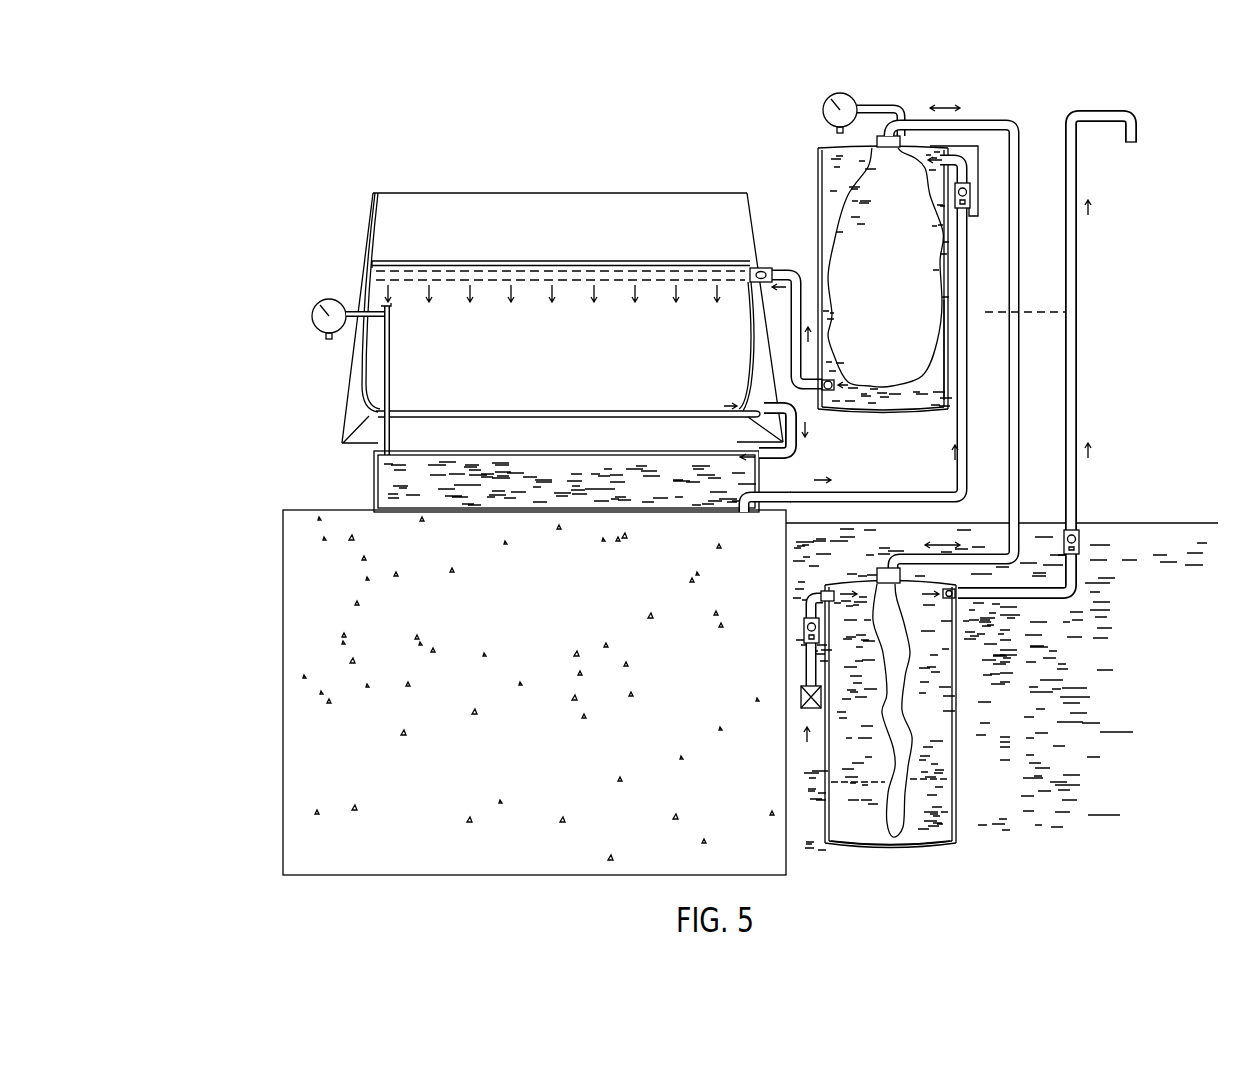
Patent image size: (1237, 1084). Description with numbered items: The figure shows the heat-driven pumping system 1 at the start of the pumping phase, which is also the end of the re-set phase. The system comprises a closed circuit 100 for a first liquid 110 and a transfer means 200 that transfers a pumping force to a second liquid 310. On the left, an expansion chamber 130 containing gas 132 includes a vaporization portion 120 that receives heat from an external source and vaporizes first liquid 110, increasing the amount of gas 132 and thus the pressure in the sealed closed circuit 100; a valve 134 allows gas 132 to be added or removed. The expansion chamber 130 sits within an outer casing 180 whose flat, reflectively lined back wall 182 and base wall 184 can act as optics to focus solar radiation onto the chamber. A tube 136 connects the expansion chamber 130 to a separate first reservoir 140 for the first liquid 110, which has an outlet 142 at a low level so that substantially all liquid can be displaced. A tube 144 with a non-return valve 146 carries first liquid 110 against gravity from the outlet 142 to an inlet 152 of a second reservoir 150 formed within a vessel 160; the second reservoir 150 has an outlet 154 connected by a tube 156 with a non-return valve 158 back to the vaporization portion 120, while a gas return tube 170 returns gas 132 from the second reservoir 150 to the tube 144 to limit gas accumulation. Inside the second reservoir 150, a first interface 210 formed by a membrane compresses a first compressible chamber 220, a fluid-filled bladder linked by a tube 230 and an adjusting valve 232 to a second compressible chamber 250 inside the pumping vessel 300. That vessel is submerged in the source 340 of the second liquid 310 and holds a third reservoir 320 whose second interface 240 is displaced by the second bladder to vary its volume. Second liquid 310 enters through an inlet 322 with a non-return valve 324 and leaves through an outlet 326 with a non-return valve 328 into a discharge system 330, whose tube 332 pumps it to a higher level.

The heat-driven pumping system 1 is at (436, 171).
The closed circuit 100 is at (279, 482).
The first liquid 110 is at (385, 492).
The vaporization portion 120 is at (372, 266).
The expansion chamber 130 is at (360, 352).
The gas 132 is at (540, 320).
The valve 134 is at (311, 316).
The tube 136 is at (799, 446).
The first reservoir 140 is at (373, 463).
The outlet 142 is at (788, 507).
The tube 144 is at (884, 498).
The non-return valve 146 is at (970, 212).
The second reservoir 150 is at (818, 176).
The inlet 152 is at (930, 141).
The outlet 154 is at (838, 392).
The tube 156 is at (780, 268).
The non-return valve 158 is at (765, 266).
The vessel 160 is at (821, 147).
The gas return tube 170 is at (981, 160).
The outer casing 180 is at (373, 194).
The back wall 182 is at (384, 230).
The base wall 184 is at (352, 426).
The transfer means 200 is at (1015, 113).
The first interface 210 is at (952, 391).
The first compressible chamber 220 is at (917, 351).
The tube 230 is at (1021, 506).
The valve 232 is at (829, 97).
The second interface 240 is at (905, 808).
The second compressible chamber 250 is at (900, 750).
The pumping vessel 300 is at (968, 846).
The second liquid 310 is at (859, 815).
The third reservoir 320 is at (957, 711).
The inlet 322 is at (829, 591).
The non-return valve 324 is at (819, 629).
The outlet 326 is at (953, 600).
The non-return valve 328 is at (1080, 536).
The discharge system 330 is at (1136, 111).
The tube 332 is at (1079, 409).
The source 340 is at (1195, 524).